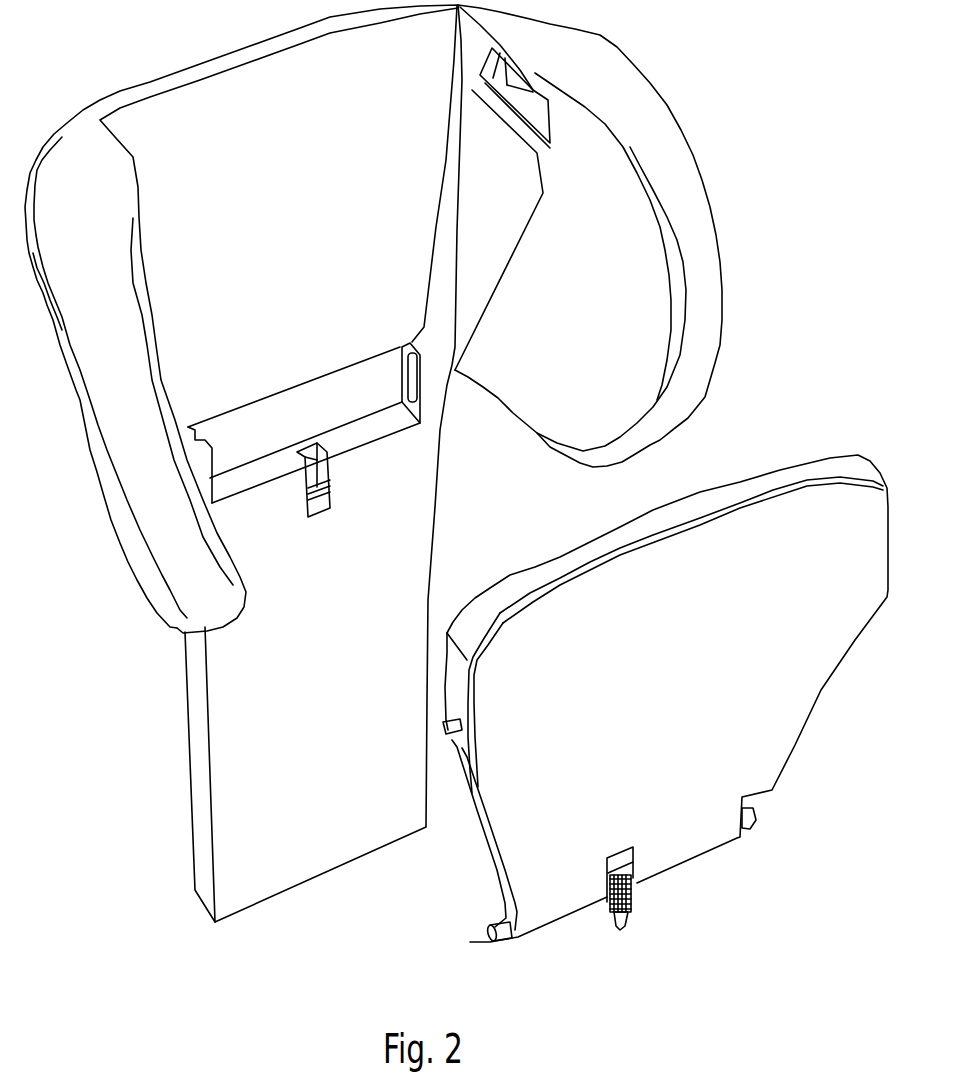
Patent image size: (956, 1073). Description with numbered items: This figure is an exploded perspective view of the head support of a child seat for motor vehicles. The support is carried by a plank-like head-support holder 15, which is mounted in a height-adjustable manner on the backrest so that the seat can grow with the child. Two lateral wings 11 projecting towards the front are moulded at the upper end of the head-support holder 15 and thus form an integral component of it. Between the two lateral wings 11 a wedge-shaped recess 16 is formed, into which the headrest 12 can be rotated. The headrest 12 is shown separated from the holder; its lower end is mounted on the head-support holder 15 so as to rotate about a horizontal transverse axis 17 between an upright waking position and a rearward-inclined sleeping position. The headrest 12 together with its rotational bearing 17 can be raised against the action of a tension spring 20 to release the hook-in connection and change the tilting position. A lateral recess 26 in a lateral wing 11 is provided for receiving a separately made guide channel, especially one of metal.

The lateral wings 11 is at (673, 293).
The headrest 12 is at (473, 843).
The head-support holder 15 is at (190, 790).
The wedge-shaped recess 16 is at (468, 214).
The horizontal transverse axis 17 is at (487, 937).
The tension spring 20 is at (650, 903).
The lateral recess 26 is at (522, 76).